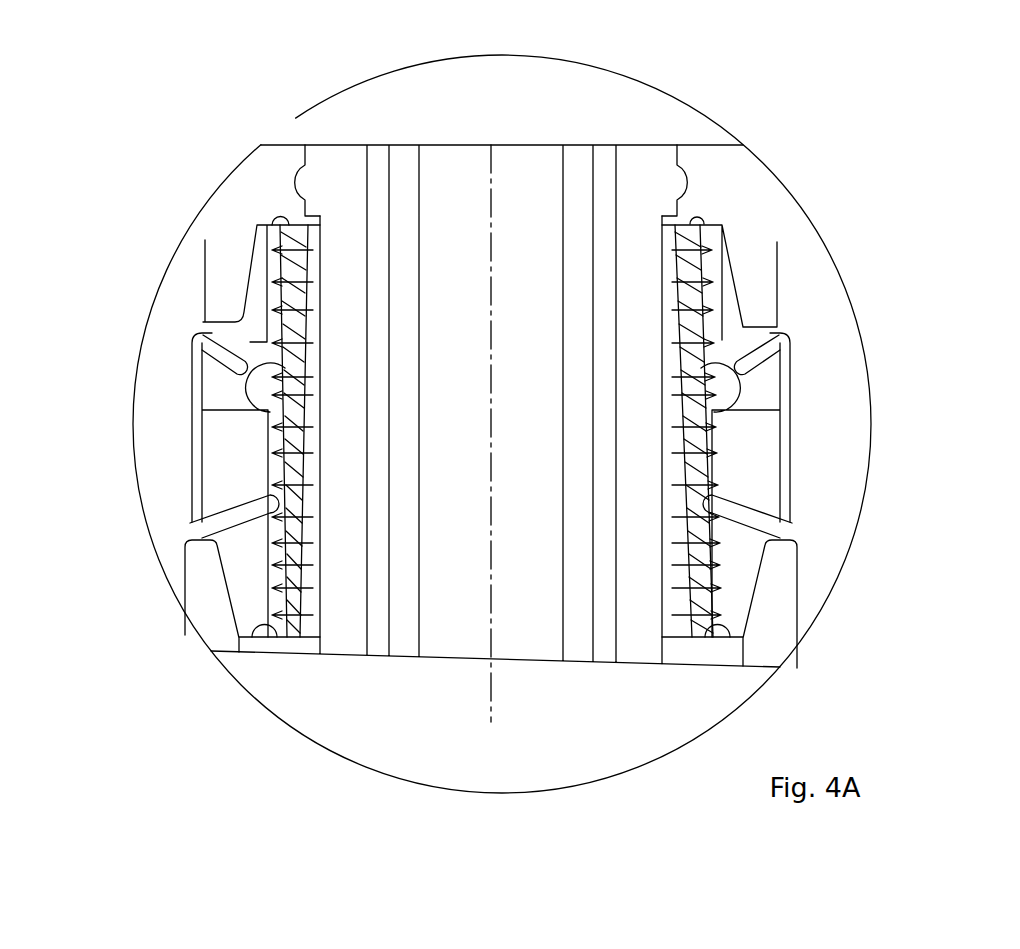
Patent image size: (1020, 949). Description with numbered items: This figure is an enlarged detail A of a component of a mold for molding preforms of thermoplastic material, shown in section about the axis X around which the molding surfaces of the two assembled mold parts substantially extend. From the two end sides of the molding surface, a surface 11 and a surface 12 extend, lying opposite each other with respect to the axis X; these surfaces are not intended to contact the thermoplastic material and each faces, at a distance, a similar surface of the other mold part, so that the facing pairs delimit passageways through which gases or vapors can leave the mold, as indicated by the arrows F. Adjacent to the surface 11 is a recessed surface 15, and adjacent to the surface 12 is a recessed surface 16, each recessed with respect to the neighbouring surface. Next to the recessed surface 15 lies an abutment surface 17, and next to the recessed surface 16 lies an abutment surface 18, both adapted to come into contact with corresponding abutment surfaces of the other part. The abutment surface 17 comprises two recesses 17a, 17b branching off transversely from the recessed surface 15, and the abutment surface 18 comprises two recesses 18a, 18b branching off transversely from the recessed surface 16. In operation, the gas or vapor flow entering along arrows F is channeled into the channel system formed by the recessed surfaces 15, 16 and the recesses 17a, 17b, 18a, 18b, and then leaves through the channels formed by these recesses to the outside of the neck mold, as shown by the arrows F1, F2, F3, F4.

The detail view circle A is at (295, 116).
The axis X is at (493, 679).
The surface 11 is at (300, 222).
The surface 12 is at (698, 215).
The recessed surface 15 is at (268, 575).
The recessed surface 16 is at (735, 605).
The abutment surface 17 is at (252, 320).
The recess 17a is at (240, 350).
The recess 17b is at (218, 510).
The abutment surface 18 is at (745, 297).
The recess 18a is at (768, 342).
The recess 18b is at (785, 518).
The arrows F is at (266, 236).
The arrow F1 is at (201, 338).
The arrow F2 is at (772, 327).
The arrow F3 is at (224, 527).
The arrow F4 is at (771, 517).